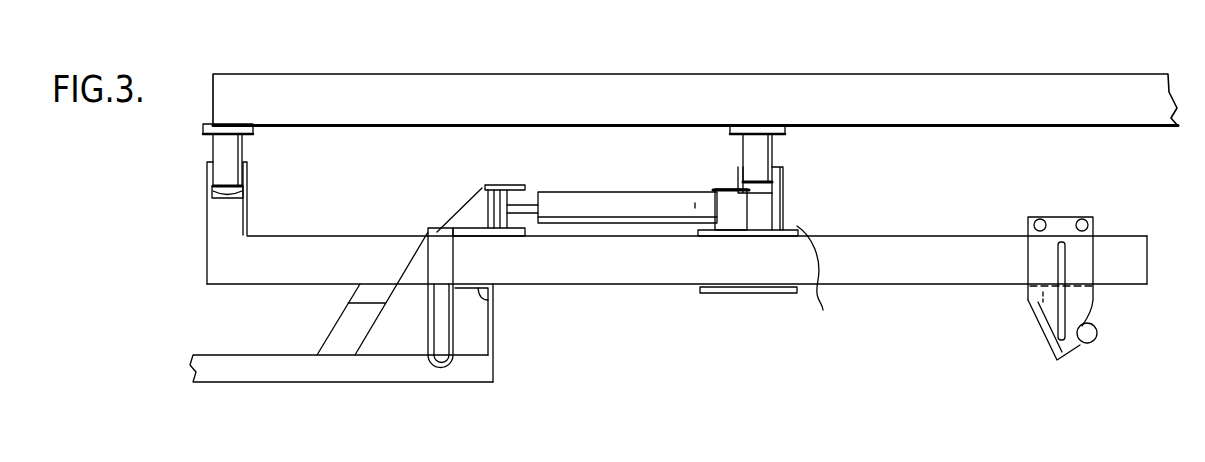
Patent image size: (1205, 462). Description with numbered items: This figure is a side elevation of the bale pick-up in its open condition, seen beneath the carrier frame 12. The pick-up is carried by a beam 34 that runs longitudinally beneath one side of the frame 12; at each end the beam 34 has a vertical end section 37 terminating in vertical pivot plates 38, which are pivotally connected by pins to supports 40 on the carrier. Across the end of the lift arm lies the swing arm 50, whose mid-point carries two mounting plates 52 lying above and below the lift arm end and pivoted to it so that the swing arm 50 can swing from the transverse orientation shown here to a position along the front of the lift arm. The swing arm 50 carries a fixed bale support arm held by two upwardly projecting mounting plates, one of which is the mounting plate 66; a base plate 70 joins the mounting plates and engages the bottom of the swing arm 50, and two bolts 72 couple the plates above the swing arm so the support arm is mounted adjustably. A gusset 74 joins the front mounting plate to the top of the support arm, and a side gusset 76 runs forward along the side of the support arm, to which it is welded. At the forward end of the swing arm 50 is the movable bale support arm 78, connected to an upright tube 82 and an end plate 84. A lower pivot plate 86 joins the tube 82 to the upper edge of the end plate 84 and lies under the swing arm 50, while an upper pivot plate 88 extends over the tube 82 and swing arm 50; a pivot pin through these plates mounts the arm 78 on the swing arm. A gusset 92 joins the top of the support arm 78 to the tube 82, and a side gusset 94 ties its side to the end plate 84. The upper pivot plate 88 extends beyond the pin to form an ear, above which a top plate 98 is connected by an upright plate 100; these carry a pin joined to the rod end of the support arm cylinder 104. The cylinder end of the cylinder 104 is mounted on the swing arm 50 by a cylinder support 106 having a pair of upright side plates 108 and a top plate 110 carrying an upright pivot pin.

The frame 12 is at (644, 70).
The beam 34 is at (320, 245).
The vertical end section 37 is at (223, 216).
The vertical pivot plates 38 is at (247, 172).
The supports 40 is at (213, 148).
The swing arm 50 is at (937, 237).
The mounting plates 52 is at (788, 292).
The mounting plate 66 is at (1087, 255).
The base plate 70 is at (1037, 302).
The bolts 72 is at (1080, 218).
The gusset 74 is at (1062, 278).
The side gusset 76 is at (1093, 303).
The movable bale support arm 78 is at (300, 358).
The upright tube 82 is at (433, 337).
The end plate 84 is at (497, 332).
The lower pivot plate 86 is at (493, 300).
The upper pivot plate 88 is at (466, 222).
The gusset 92 is at (376, 324).
The side gusset 94 is at (336, 333).
The top plate 98 is at (507, 188).
The upright plate 100 is at (472, 212).
The support arm cylinder 104 is at (632, 192).
The cylinder support 106 is at (728, 232).
The upright side plates 108 is at (713, 205).
The top plate 110 is at (723, 184).